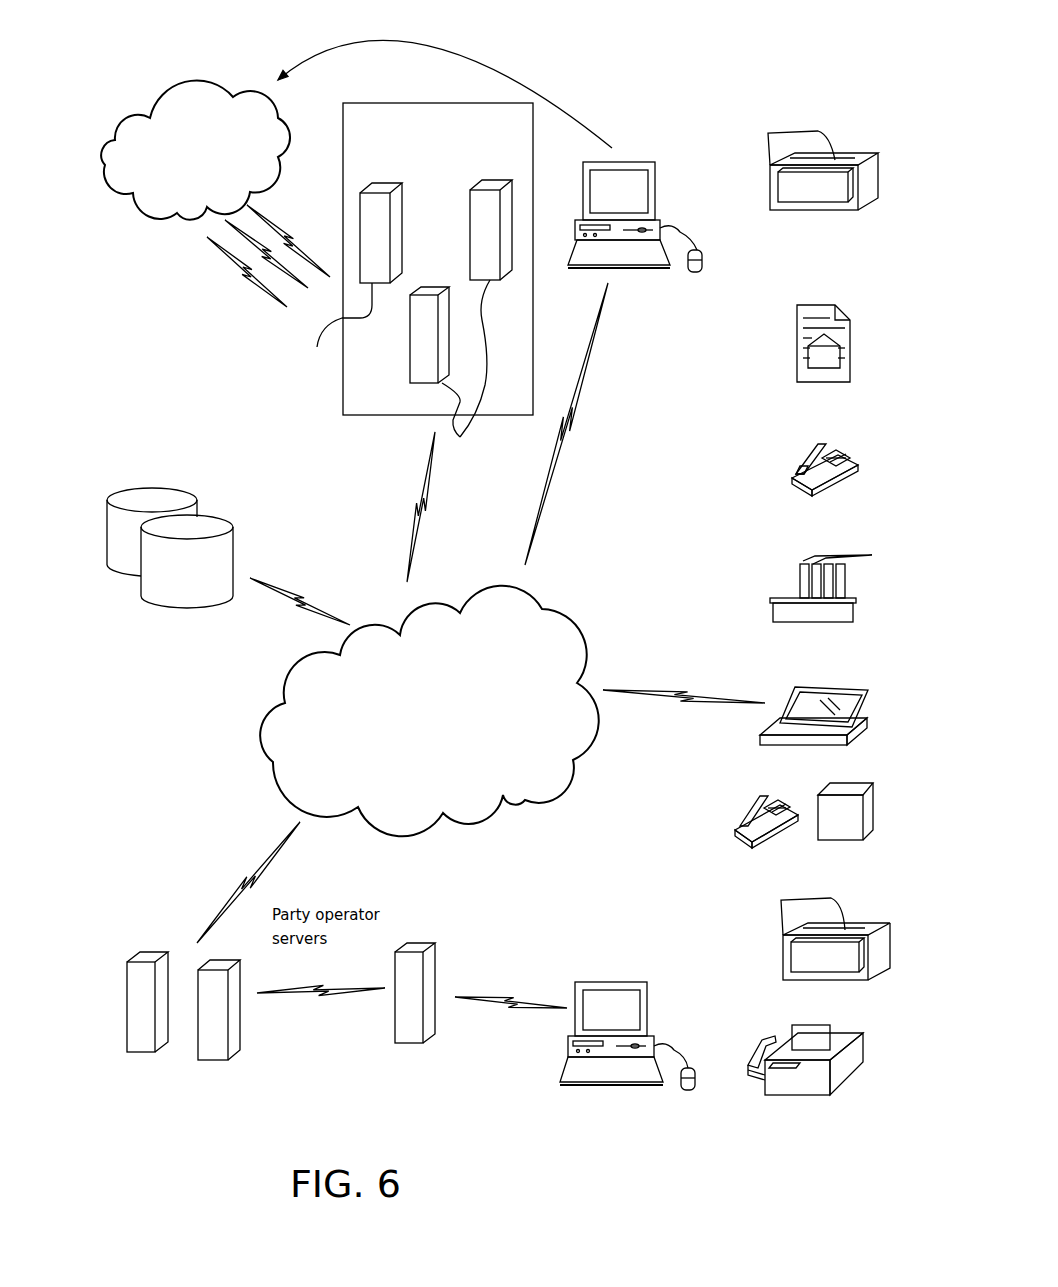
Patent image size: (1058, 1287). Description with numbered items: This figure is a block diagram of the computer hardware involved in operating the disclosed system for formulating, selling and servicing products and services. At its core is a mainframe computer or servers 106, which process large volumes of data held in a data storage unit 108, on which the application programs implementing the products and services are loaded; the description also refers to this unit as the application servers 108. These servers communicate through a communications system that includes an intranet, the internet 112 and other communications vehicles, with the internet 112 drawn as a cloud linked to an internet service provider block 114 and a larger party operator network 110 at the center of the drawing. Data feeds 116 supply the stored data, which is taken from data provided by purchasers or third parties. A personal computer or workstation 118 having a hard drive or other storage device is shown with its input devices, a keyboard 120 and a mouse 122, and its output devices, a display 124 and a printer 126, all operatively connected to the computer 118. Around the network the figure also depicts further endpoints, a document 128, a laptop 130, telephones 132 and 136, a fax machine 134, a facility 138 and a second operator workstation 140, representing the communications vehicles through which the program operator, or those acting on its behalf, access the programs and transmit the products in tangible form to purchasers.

The mainframe computer or servers 106 is at (180, 948).
The data storage unit 108 is at (418, 950).
The party operator network 110 is at (290, 757).
The internet 112 is at (168, 190).
The internet service provider 114 is at (358, 415).
The data feeds 116 is at (152, 500).
The personal computer or workstation 118 is at (575, 228).
The keyboard 120 is at (590, 258).
The mouse 122 is at (697, 272).
The display 124 is at (655, 190).
The printer 126 is at (812, 212).
The document 128 is at (797, 342).
The laptop computer 130 is at (760, 742).
The telephone 132 is at (813, 492).
The fax machine 134 is at (785, 1083).
The telephone and modem 136 is at (845, 840).
The factory / third party system 138 is at (787, 622).
The party operator computer 140 is at (568, 1047).